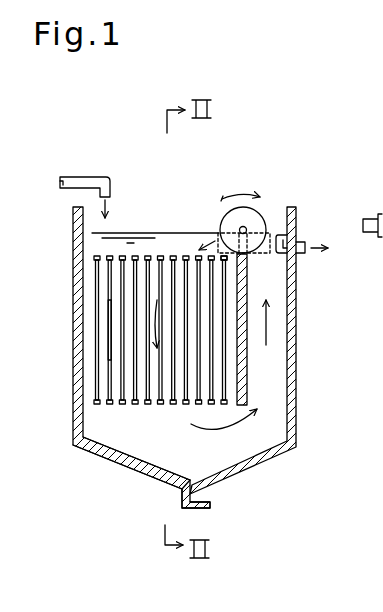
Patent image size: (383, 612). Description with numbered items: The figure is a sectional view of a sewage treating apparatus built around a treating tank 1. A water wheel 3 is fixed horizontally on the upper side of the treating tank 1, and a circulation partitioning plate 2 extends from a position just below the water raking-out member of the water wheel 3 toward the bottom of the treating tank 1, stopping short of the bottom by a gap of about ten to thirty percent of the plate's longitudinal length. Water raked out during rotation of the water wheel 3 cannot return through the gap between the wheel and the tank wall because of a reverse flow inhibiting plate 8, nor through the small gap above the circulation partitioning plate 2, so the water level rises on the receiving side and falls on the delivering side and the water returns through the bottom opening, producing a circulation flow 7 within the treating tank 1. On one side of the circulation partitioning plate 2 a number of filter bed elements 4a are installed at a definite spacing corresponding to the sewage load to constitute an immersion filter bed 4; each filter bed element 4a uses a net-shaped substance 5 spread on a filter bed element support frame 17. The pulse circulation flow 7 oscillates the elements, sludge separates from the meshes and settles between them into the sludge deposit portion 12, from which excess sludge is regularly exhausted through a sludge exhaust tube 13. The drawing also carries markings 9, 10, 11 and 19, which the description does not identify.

The treating tank 1 is at (215, 357).
The circulation partitioning plate 2 is at (243, 365).
The water wheel 3 is at (252, 226).
The immersion filter bed 4 is at (165, 376).
The filter bed element 4a is at (110, 338).
The net-shaped substance 5 is at (127, 280).
The circulation flow 7 is at (257, 451).
The reverse flow inhibiting plate 8 is at (231, 247).
The outlet opening 9 is at (283, 243).
The outlet pipe 10 is at (300, 256).
The inlet pipe 11 is at (80, 177).
The sludge deposit portion 12 is at (200, 468).
The sludge exhaust tube 13 is at (206, 507).
The filter bed element support frame 17 is at (150, 405).
The rotation direction arrow 19 is at (240, 192).